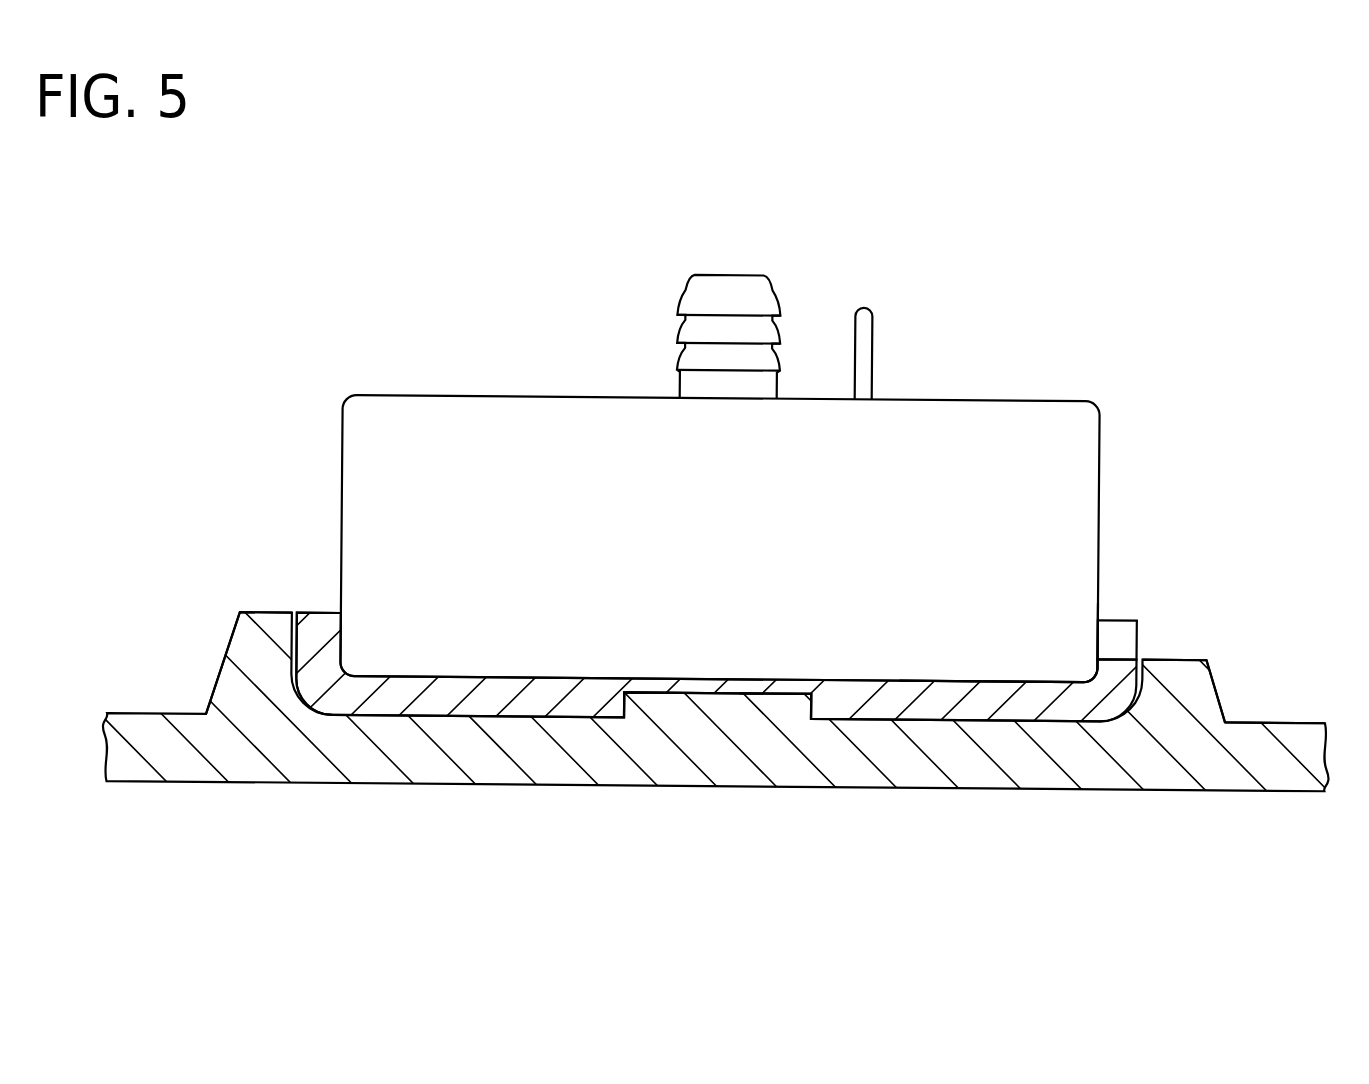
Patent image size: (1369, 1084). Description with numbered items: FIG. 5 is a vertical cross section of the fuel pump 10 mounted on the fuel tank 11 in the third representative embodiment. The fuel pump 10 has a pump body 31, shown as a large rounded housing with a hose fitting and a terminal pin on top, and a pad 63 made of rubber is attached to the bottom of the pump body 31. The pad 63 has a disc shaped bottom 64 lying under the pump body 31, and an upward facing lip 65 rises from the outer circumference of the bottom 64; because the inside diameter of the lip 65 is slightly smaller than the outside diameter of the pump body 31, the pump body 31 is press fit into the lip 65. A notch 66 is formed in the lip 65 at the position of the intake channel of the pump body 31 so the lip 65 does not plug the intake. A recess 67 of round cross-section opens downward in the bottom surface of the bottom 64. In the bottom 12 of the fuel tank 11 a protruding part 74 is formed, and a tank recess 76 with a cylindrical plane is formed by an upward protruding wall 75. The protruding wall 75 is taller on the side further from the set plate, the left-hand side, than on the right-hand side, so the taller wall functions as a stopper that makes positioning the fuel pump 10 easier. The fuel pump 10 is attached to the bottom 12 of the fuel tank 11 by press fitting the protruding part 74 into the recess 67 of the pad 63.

The fuel pump 10 is at (681, 452).
The fuel tank 11 is at (925, 787).
The bottom of the fuel tank 12 is at (1293, 723).
The pump body 31 is at (302, 478).
The pad 63 is at (998, 680).
The bottom of the pad 64 is at (473, 705).
The lip 65 is at (322, 613).
The notch 66 is at (1142, 633).
The recess 67 is at (812, 701).
The protruding part 74 is at (625, 703).
The protruding wall 75 is at (234, 628).
The tank recess 76 is at (303, 678).